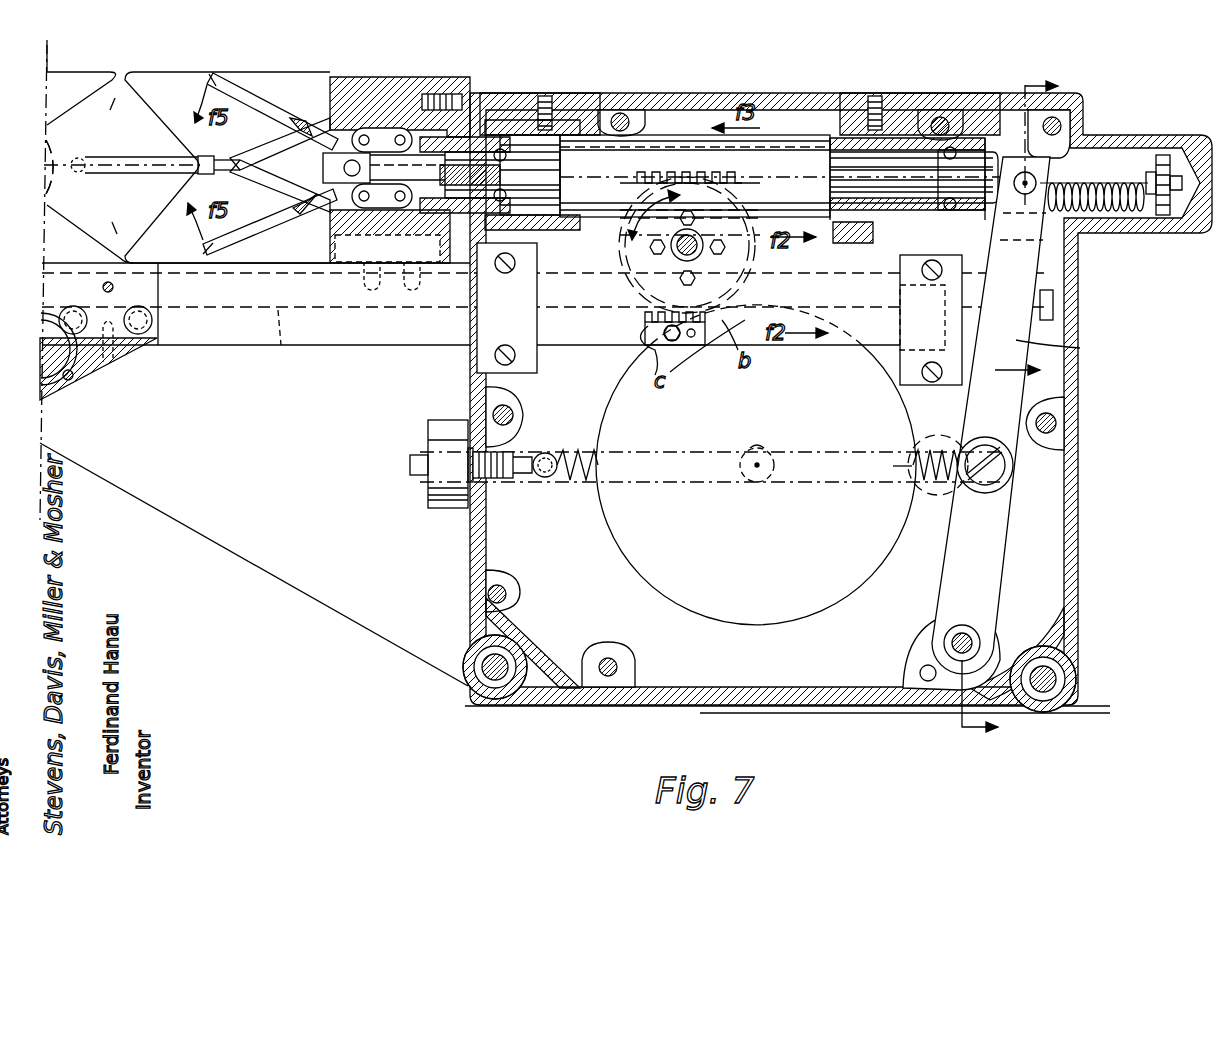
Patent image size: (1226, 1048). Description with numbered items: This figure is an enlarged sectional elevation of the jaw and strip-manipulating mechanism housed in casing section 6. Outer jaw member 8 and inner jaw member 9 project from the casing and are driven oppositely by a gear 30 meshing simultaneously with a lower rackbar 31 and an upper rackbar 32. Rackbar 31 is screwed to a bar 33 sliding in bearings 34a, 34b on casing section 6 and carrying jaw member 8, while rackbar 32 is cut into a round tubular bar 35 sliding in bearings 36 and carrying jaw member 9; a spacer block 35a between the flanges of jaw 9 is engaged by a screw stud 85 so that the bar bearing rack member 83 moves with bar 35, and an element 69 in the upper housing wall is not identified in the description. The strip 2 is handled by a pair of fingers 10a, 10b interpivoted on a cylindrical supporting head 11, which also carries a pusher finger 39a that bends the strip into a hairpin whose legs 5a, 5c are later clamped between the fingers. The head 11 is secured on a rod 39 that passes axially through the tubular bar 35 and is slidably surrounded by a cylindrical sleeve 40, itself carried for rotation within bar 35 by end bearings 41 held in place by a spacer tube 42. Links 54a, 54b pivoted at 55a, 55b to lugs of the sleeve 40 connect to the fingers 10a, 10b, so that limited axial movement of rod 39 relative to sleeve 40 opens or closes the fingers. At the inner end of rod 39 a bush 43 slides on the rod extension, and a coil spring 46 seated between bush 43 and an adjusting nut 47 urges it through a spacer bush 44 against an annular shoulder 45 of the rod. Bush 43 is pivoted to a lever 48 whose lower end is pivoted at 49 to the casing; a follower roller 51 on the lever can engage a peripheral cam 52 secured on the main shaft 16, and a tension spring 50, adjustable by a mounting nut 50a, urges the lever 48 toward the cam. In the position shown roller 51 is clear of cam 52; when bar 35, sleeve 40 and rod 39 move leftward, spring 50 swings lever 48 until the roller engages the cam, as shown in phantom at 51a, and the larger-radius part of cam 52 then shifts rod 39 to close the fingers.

The strip 2 is at (64, 150).
The leg of the strip 5a is at (185, 175).
The leg of the strip 5c is at (175, 158).
The casing section 6 is at (1083, 467).
The outer jaw member 8 is at (85, 85).
The inner jaw member 9 is at (290, 85).
The manipulating finger 10a is at (245, 85).
The manipulating finger 10b is at (226, 231).
The cylindrical supporting head 11 is at (400, 158).
The main shaft 16 is at (762, 482).
The gear 30 is at (762, 262).
The lower rackbar 31 is at (640, 330).
The upper rackbar 32 is at (650, 172).
The bar 33 is at (388, 330).
The sliding bearing 34a is at (488, 348).
The sliding bearing 34b is at (958, 365).
The round tubular bar 35 is at (600, 188).
The spacer block 35a is at (345, 90).
The bearings 36 is at (530, 120).
The rod 39 is at (590, 172).
The pusher finger 39a is at (275, 165).
The cylindrical sleeve 40 is at (898, 212).
The end bearings 41 is at (515, 115).
The spacer tube 42 is at (563, 150).
The bush 43 is at (1020, 160).
The spacer bush 44 is at (970, 150).
The annular shoulder 45 is at (985, 225).
The coil spring 46 is at (1115, 168).
The spring-tension adjusting nut 47 is at (1165, 155).
The lever 48 is at (1052, 352).
The pivot 49 is at (985, 600).
The tension spring 50 is at (562, 480).
The adjustable mounting nut 50a is at (447, 495).
The follower roller 51 is at (978, 435).
The phantom position of follower roller 51a is at (925, 495).
The peripheral cam 52 is at (870, 560).
The link 54a is at (380, 130).
The link 54b is at (365, 200).
The pivot 55a is at (420, 95).
The pivot 55b is at (410, 210).
The screw 69 is at (885, 150).
The rack member 83 is at (281, 341).
The screw stud 85 is at (368, 260).